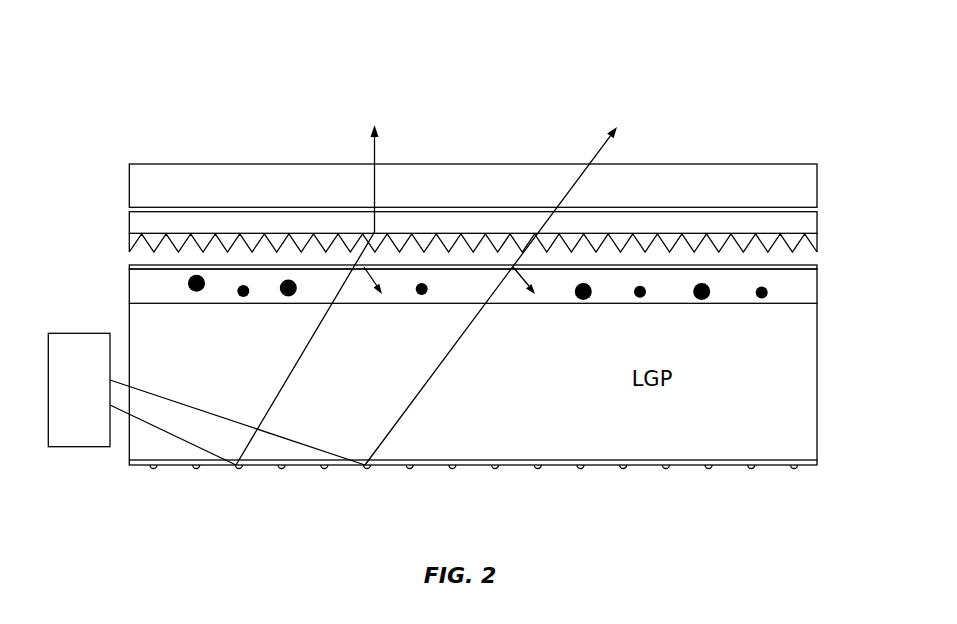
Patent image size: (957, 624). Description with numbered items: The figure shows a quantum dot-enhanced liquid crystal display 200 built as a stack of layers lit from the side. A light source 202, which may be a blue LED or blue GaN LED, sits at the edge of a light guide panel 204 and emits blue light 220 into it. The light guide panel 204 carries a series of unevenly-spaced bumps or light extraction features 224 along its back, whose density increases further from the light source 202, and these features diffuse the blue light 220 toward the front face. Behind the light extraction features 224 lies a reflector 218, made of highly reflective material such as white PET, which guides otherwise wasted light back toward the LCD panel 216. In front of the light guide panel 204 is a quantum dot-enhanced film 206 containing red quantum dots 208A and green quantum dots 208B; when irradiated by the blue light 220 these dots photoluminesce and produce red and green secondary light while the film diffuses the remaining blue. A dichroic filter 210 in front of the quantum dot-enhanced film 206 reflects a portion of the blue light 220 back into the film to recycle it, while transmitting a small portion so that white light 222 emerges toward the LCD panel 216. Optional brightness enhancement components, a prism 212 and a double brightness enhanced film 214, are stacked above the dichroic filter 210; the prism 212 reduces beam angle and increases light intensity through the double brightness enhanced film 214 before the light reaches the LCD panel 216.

The quantum dot-enhanced liquid crystal display 200 is at (722, 42).
The light source 202 is at (76, 448).
The light guide panel 204 is at (737, 447).
The quantum dot-enhanced film 206 is at (810, 287).
The red quantum dots 208A is at (188, 283).
The green quantum dots 208B is at (242, 298).
The dichroic filter 210 is at (817, 265).
The prism 212 is at (788, 232).
The double brightness enhanced film 214 is at (722, 225).
The LCD panel 216 is at (138, 182).
The reflector 218 is at (553, 466).
The blue light 220 is at (285, 397).
The white light 222 is at (378, 151).
The light extraction features 224 is at (196, 472).